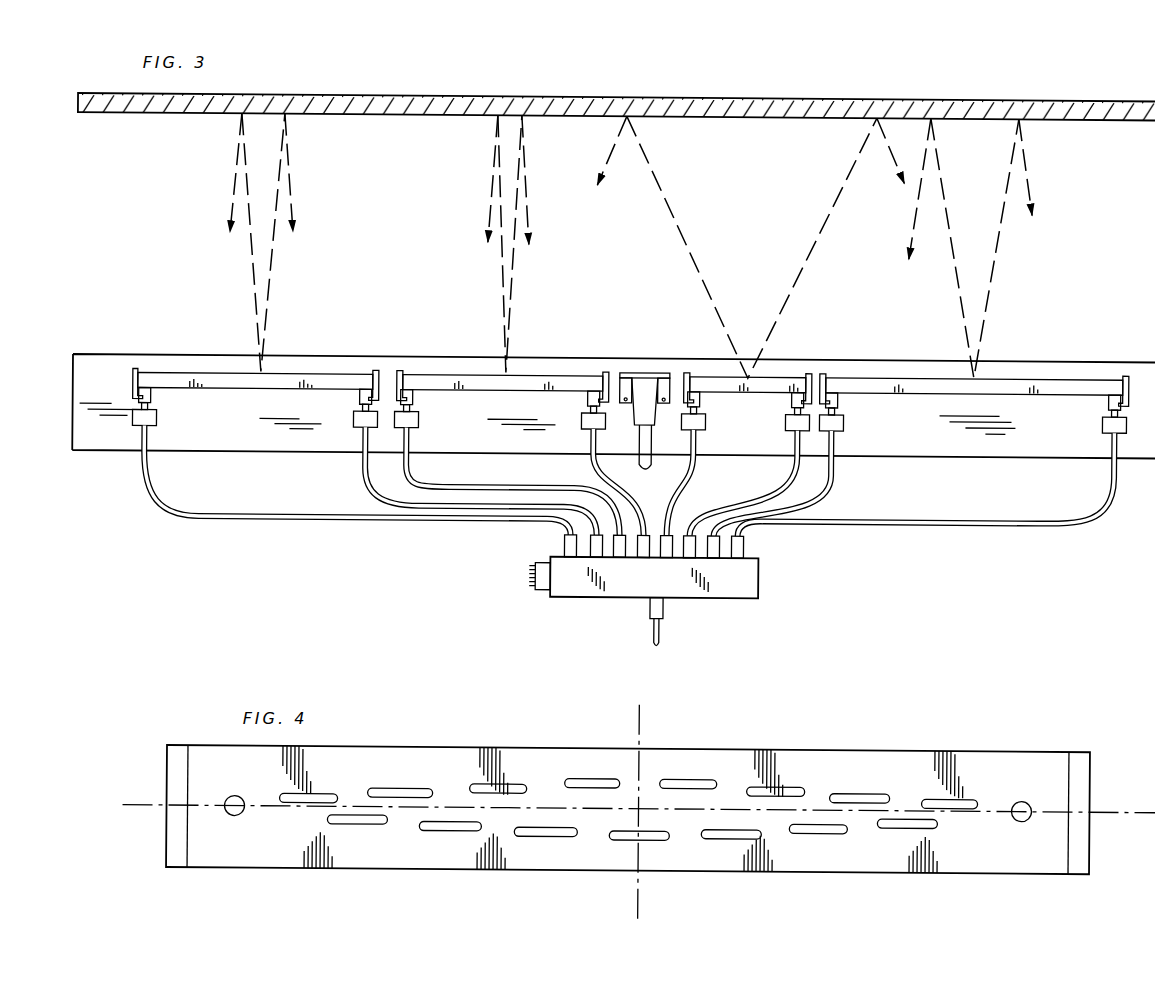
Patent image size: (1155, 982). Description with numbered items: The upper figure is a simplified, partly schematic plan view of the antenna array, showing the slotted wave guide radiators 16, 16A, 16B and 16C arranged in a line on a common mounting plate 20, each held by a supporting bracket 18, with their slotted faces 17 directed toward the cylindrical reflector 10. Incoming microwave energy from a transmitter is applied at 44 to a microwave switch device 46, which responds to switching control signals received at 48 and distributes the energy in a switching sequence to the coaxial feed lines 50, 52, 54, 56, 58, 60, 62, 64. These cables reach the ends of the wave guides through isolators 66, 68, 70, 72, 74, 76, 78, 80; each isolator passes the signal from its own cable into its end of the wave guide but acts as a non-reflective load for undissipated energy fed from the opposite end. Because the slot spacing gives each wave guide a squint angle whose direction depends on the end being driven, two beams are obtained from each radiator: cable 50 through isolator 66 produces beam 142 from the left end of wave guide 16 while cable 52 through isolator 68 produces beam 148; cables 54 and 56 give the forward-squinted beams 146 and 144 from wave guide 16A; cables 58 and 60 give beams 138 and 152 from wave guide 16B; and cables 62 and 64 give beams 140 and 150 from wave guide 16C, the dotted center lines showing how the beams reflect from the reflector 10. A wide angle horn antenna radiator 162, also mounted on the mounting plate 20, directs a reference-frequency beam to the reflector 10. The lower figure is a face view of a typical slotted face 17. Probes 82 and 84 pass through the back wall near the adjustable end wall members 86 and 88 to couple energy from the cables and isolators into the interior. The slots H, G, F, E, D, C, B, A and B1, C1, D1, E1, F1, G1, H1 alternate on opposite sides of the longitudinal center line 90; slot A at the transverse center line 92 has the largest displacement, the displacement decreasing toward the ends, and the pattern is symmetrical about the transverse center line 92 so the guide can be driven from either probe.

In FIG. 3, the reflector 10 is at (740, 93).
In FIG. 3, the slotted wave guide radiator 16 is at (177, 371).
In FIG. 4, the slotted wave guide radiator 16 is at (556, 745).
In FIG. 3, the slotted face 17 is at (334, 370).
In FIG. 4, the slotted face 17 is at (827, 747).
In FIG. 3, the slotted wave guide radiator 16A is at (446, 371).
In FIG. 3, the slotted wave guide radiator 16B is at (778, 376).
In FIG. 3, the slotted wave guide radiator 16C is at (1050, 372).
In FIG. 3, the supporting bracket 18 is at (133, 385).
In FIG. 3, the common mounting plate 20 is at (96, 452).
In FIG. 3, the transmitter input 44 is at (665, 625).
In FIG. 3, the microwave switch device 46 is at (753, 577).
In FIG. 3, the switching control signal input 48 is at (541, 592).
In FIG. 3, the coaxial feed line 50 is at (310, 518).
In FIG. 3, the coaxial feed line 52 is at (364, 468).
In FIG. 3, the coaxial feed line 54 is at (456, 480).
In FIG. 3, the coaxial feed line 56 is at (593, 465).
In FIG. 3, the coaxial feed line 58 is at (690, 471).
In FIG. 3, the coaxial feed line 60 is at (743, 481).
In FIG. 3, the coaxial feed line 62 is at (834, 472).
In FIG. 3, the coaxial feed line 64 is at (997, 514).
In FIG. 3, the isolator 66 is at (158, 416).
In FIG. 3, the isolator 68 is at (355, 415).
In FIG. 3, the isolator 70 is at (420, 414).
In FIG. 3, the isolator 72 is at (584, 415).
In FIG. 3, the isolator 74 is at (706, 413).
In FIG. 3, the isolator 76 is at (787, 414).
In FIG. 3, the isolator 78 is at (844, 418).
In FIG. 3, the isolator 80 is at (1103, 417).
In FIG. 4, the probe 82 is at (237, 815).
In FIG. 4, the probe 84 is at (1022, 815).
In FIG. 4, the end wall member 86 is at (172, 770).
In FIG. 4, the end wall member 88 is at (1090, 779).
In FIG. 4, the longitudinal center line 90 is at (154, 811).
In FIG. 4, the transverse center line 92 is at (645, 887).
In FIG. 3, the microwave beam 138 is at (594, 159).
In FIG. 3, the microwave beam 140 is at (907, 221).
In FIG. 3, the microwave beam 142 is at (232, 181).
In FIG. 3, the microwave beam 144 is at (486, 189).
In FIG. 3, the microwave beam 146 is at (526, 208).
In FIG. 3, the microwave beam 148 is at (290, 179).
In FIG. 3, the microwave beam 150 is at (1028, 169).
In FIG. 3, the microwave beam 152 is at (892, 160).
In FIG. 3, the wide angle horn antenna radiator 162 is at (648, 368).
In FIG. 4, the slot A is at (628, 837).
In FIG. 4, the slot B is at (592, 775).
In FIG. 4, the slot C is at (546, 834).
In FIG. 4, the slot D is at (510, 781).
In FIG. 4, the slot E is at (457, 829).
In FIG. 4, the slot F is at (400, 786).
In FIG. 4, the slot G is at (355, 823).
In FIG. 4, the slot H is at (322, 792).
In FIG. 4, the slot B1 is at (683, 775).
In FIG. 4, the slot C1 is at (737, 835).
In FIG. 4, the slot D1 is at (788, 782).
In FIG. 4, the slot E1 is at (826, 829).
In FIG. 4, the slot F1 is at (868, 788).
In FIG. 4, the slot G1 is at (930, 823).
In FIG. 4, the slot H1 is at (965, 793).